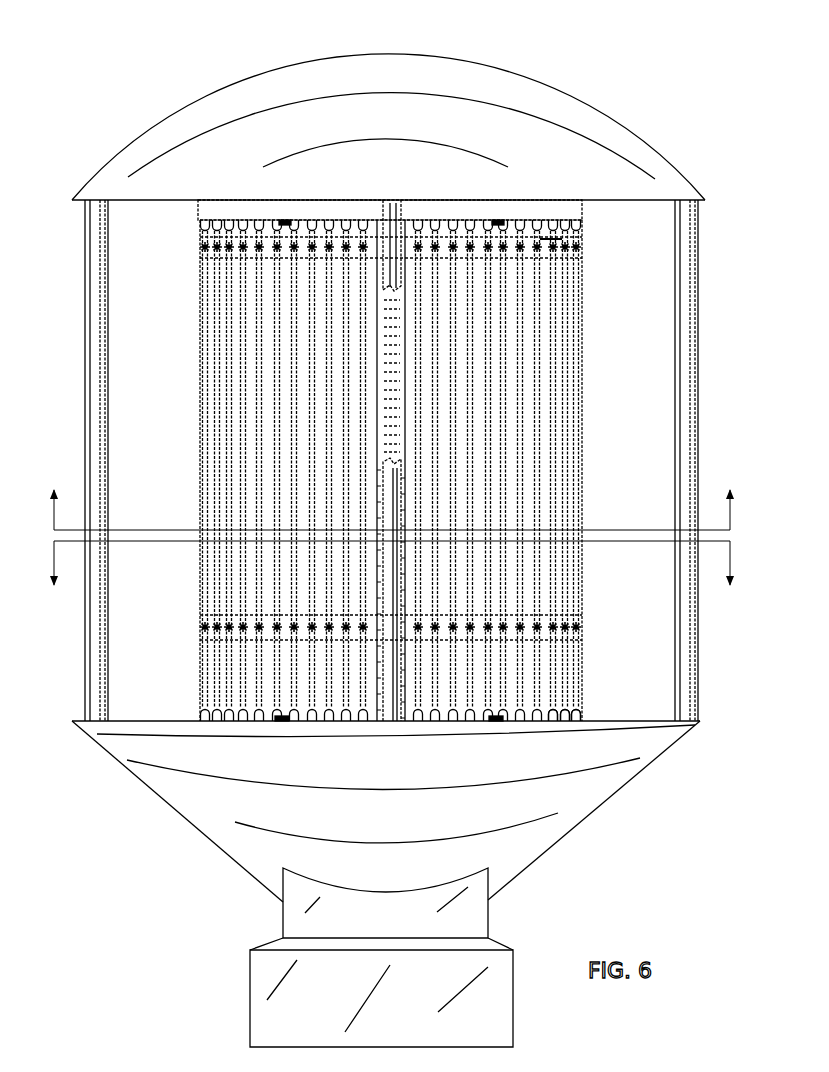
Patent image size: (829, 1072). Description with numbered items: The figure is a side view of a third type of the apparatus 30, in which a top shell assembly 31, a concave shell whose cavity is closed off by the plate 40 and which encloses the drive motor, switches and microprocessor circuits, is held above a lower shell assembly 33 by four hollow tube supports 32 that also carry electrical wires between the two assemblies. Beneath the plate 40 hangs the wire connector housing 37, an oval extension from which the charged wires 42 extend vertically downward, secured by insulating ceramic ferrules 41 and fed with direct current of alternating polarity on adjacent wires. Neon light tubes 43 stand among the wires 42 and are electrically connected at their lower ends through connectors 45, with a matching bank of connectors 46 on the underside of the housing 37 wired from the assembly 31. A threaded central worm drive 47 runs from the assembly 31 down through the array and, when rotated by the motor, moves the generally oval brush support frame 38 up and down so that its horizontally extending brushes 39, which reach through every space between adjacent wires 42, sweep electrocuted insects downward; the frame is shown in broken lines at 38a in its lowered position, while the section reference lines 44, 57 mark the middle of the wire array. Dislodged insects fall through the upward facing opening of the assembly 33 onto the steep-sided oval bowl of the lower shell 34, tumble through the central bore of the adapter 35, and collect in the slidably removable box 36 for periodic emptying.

The apparatus 30 is at (697, 120).
The top shell assembly 31 is at (585, 121).
The tube supports 32 is at (382, 212).
The lower shell assembly 33 is at (618, 806).
The lower shell 34 is at (558, 818).
The adapter 35 is at (298, 920).
The slidably removable collector box 36 is at (258, 987).
The wire connector housing 37 is at (280, 211).
The brush support frame 38 is at (560, 238).
The brush support frame in lower position 38a is at (565, 632).
The brushes 39 is at (218, 252).
The plate 40 is at (148, 203).
The insulating ceramic ferrules 41 is at (227, 218).
The charged wires 42 is at (232, 352).
The neon light tubes 43 is at (267, 470).
The lower section 44 is at (394, 579).
The connectors 45 is at (483, 721).
The tube outlet nozzles 46 is at (556, 722).
The threaded central worm drive 47 is at (395, 368).
The upper section 57 is at (394, 494).